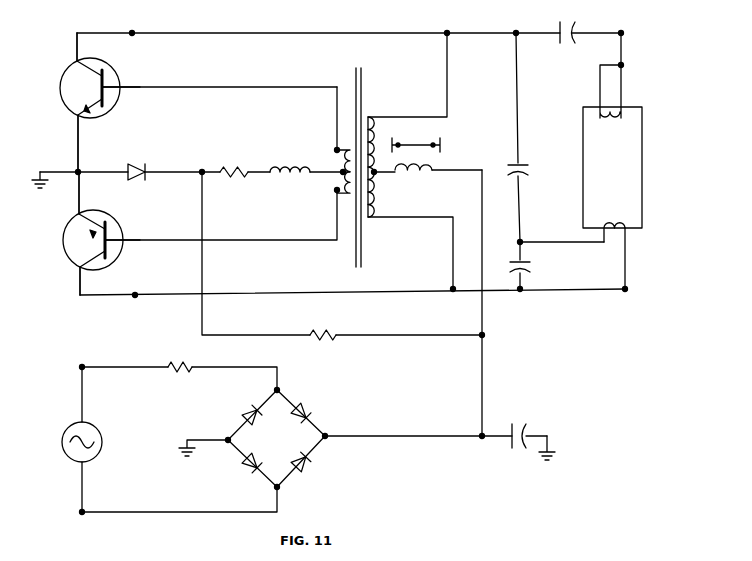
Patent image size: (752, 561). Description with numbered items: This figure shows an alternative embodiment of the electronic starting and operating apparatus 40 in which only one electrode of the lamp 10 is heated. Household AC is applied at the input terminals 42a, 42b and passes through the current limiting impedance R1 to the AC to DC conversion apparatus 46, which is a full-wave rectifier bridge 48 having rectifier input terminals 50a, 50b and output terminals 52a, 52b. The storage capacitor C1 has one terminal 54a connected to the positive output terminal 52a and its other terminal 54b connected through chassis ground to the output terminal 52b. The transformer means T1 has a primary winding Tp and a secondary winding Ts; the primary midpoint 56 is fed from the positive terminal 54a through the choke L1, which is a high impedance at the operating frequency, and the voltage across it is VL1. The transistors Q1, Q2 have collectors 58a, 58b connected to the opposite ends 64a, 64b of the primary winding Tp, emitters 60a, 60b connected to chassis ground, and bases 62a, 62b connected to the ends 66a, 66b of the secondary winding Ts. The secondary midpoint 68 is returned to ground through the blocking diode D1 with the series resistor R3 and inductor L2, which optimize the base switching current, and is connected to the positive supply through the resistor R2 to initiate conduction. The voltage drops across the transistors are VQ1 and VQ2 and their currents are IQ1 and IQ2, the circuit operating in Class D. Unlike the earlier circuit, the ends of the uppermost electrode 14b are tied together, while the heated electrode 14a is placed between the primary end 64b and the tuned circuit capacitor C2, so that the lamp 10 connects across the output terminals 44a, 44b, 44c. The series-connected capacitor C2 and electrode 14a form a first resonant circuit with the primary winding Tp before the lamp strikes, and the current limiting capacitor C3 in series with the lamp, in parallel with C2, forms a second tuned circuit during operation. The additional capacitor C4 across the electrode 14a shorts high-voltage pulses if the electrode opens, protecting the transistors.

The electronic starting and operating apparatus 40 is at (280, 21).
The lamp 10 is at (665, 174).
The lamp electrode 14a is at (618, 212).
The uppermost electrode 14b is at (614, 124).
The input terminal 42a is at (84, 362).
The input terminal 42b is at (84, 518).
The apparatus output terminal 44a is at (622, 28).
The apparatus output terminal 44b is at (620, 294).
The apparatus output terminal 44c is at (522, 238).
The AC to DC conversion apparatus 46 is at (303, 435).
The full-wave rectifier bridge 48 is at (284, 440).
The rectifier input terminal 50a is at (280, 388).
The rectifier input terminal 50b is at (272, 490).
The positive output terminal 52a is at (330, 436).
The rectifier output terminal 52b is at (222, 436).
The storage capacitor terminal 54a is at (480, 432).
The storage capacitor terminal 54b is at (548, 432).
The primary winding midpoint 56 is at (380, 176).
The collector 58a is at (70, 72).
The collector 58b is at (70, 262).
The emitter 60a is at (67, 108).
The emitter 60b is at (67, 226).
The base 62a is at (118, 96).
The base 62b is at (117, 232).
The primary winding end 64a is at (450, 28).
The primary winding end 64b is at (455, 294).
The secondary winding end 66a is at (336, 140).
The secondary winding end 66b is at (336, 198).
The secondary winding midpoint 68 is at (340, 176).
The transistor Q1 is at (92, 126).
The transistor Q2 is at (90, 206).
The blocking diode D1 is at (136, 168).
The current limiting impedance R1 is at (174, 362).
The resistor R2 is at (322, 330).
The resistor R3 is at (224, 167).
The choke L1 is at (430, 172).
The inductor L2 is at (270, 180).
The storage capacitor C1 is at (516, 458).
The tuned circuit capacitor C2 is at (530, 172).
The current limiting capacitor C3 is at (563, 22).
The additional capacitor C4 is at (532, 268).
The transformer means T1 is at (358, 68).
The primary winding Tp is at (376, 198).
The secondary winding Ts is at (334, 160).
The voltage drop across Q1 VQ1 is at (125, 24).
The voltage drop across Q2 VQ2 is at (135, 310).
The current through Q1 IQ1 is at (128, 57).
The current through Q2 IQ2 is at (138, 279).
The voltage across L1 VL1 is at (432, 140).